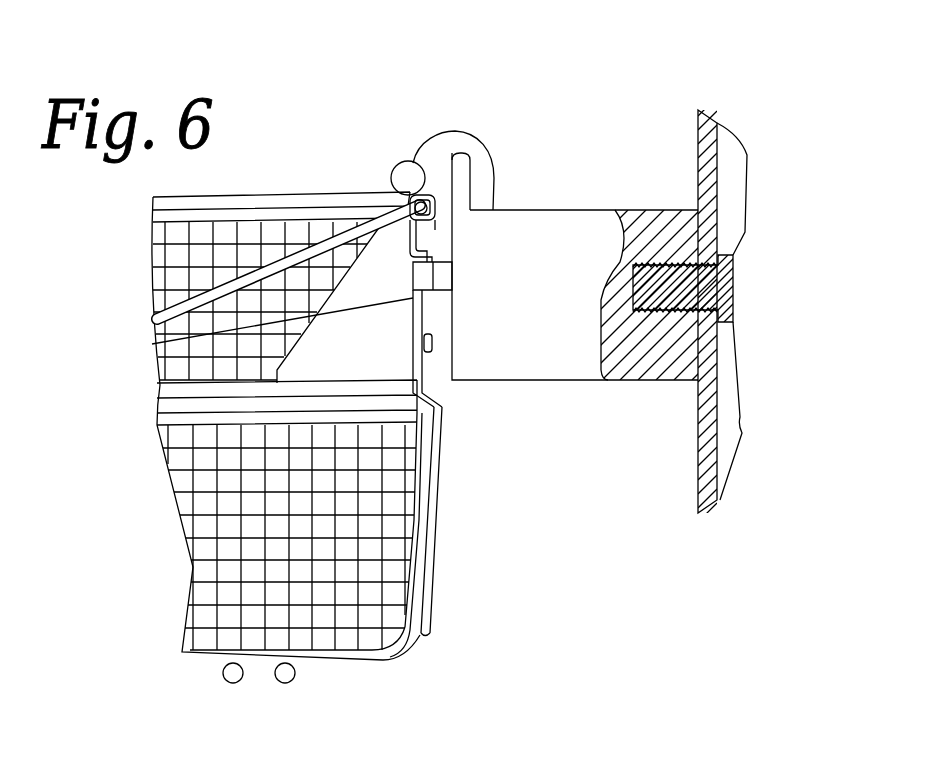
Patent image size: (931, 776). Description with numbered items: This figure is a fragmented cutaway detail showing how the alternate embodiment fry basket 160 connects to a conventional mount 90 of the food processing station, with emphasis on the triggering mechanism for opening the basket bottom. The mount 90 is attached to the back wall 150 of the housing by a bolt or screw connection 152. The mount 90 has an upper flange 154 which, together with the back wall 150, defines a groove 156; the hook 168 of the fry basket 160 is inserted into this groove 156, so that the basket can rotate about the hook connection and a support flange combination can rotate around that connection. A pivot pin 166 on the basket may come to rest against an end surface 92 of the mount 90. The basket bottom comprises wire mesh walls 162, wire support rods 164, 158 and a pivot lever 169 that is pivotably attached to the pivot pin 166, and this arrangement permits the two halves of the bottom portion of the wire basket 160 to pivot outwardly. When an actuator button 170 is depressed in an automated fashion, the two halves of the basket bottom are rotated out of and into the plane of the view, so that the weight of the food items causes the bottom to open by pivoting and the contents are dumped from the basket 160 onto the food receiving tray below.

The mount 90 is at (560, 358).
The end surface 92 is at (440, 290).
The back wall 150 is at (714, 112).
The bolt or screw connection 152 is at (737, 284).
The upper flange 154 is at (478, 184).
The groove 156 is at (600, 208).
The wire support rods 158 is at (285, 683).
The fry basket 160 is at (306, 155).
The wire mesh walls 162 is at (240, 528).
The wire support rods 164 is at (412, 603).
The pivot pin 166 is at (260, 323).
The hook 168 is at (426, 142).
The pivot lever 169 is at (432, 577).
The actuator button 170 is at (442, 277).